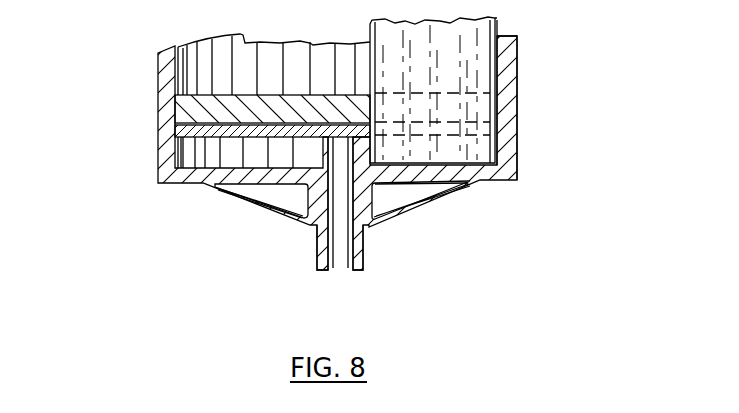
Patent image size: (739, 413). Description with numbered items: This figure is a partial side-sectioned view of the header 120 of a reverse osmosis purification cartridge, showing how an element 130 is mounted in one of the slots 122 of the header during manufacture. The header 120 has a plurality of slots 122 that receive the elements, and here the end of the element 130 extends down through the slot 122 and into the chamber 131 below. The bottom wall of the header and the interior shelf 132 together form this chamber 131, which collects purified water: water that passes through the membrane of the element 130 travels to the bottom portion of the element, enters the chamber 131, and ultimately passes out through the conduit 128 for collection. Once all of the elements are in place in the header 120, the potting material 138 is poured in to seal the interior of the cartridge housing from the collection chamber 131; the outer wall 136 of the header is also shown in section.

The header 120 is at (483, 182).
The slot 122 is at (366, 152).
The conduit 128 is at (320, 233).
The element 130 is at (457, 73).
The chamber 131 is at (213, 153).
The interior shelf 132 is at (268, 128).
The outer wall 136 is at (513, 111).
The potting material 138 is at (207, 105).